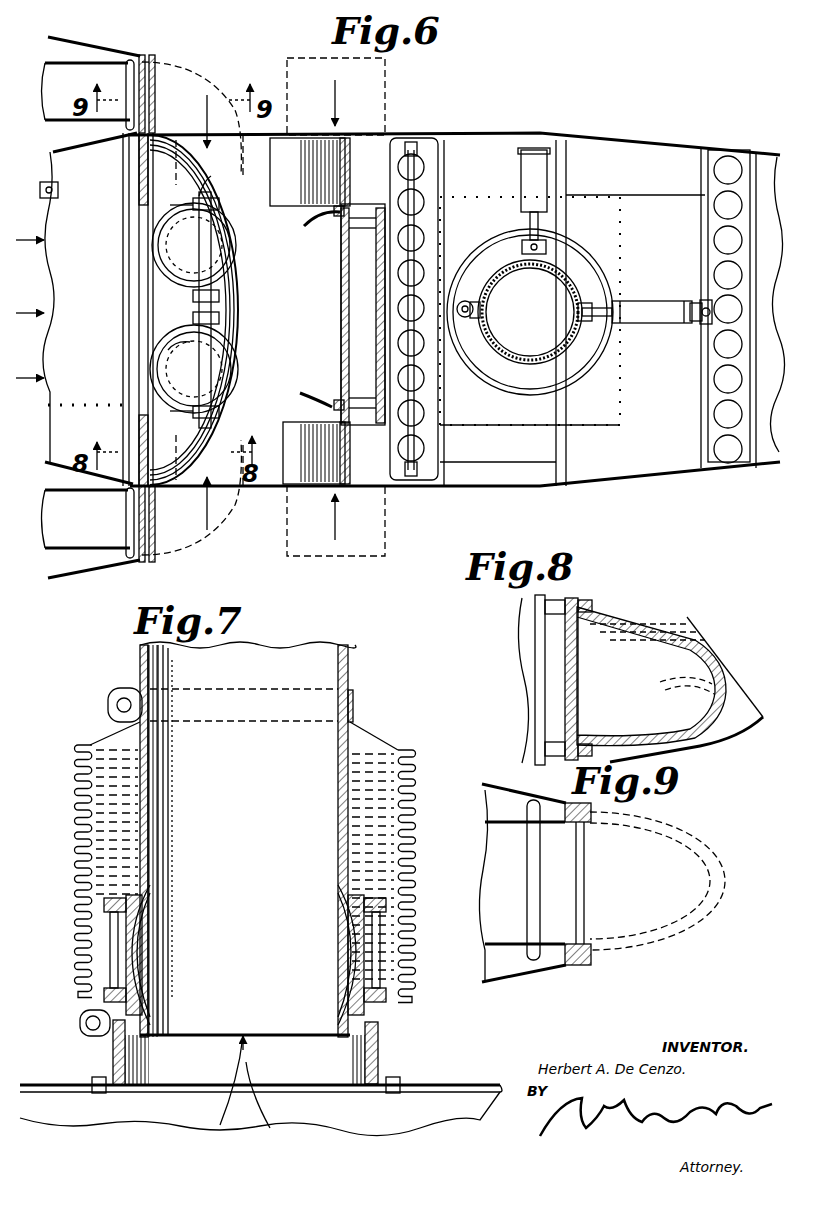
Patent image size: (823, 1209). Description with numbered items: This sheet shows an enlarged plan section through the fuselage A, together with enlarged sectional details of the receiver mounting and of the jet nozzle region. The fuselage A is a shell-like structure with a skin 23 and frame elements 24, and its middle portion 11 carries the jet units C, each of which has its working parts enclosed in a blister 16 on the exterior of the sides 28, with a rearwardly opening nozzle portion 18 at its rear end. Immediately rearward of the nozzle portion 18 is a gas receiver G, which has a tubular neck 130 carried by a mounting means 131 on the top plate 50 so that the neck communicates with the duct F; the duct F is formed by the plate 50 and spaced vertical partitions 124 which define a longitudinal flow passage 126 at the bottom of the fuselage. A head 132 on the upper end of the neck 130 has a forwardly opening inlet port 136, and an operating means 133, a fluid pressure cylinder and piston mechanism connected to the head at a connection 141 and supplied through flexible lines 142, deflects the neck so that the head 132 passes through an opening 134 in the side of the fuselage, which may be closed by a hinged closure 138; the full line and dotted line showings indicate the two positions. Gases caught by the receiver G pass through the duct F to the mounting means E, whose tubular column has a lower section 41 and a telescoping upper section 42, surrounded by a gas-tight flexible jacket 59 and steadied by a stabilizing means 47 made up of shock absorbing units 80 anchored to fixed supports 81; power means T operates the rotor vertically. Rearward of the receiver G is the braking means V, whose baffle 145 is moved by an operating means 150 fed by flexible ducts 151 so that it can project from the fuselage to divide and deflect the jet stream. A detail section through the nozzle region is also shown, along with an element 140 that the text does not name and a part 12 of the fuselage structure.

In FIG. 6, the middle portion 11 is at (510, 482).
In FIG. 6, the rear frame 12 is at (752, 464).
In FIG. 6, the blister 16 is at (74, 38).
In FIG. 8, the blister 16 is at (502, 770).
In FIG. 9, the blister 16 is at (522, 883).
In FIG. 6, the nozzle portion 18 is at (146, 70).
In FIG. 9, the nozzle portion 18 is at (560, 832).
In FIG. 6, the skin 23 is at (676, 142).
In FIG. 6, the frame elements 24 is at (568, 174).
In FIG. 6, the sides 28 is at (462, 136).
In FIG. 6, the lower section 41 is at (496, 284).
In FIG. 6, the upper section 42 is at (498, 288).
In FIG. 6, the stabilizing means 47 is at (652, 326).
In FIG. 7, the top plate 50 is at (452, 1084).
In FIG. 6, the flexible jacket 59 is at (602, 372).
In FIG. 6, the shock absorbing units 80 is at (520, 176).
In FIG. 6, the fixed supports 81 is at (698, 300).
In FIG. 6, the vertical partitions 124 is at (46, 408).
In FIG. 7, the flow passage 126 is at (260, 1114).
In FIG. 7, the tubular neck 130 is at (350, 672).
In FIG. 6, the mounting means 131 is at (150, 264).
In FIG. 7, the mounting means 131 is at (384, 938).
In FIG. 6, the head 132 is at (182, 70).
In FIG. 8, the head 132 is at (648, 608).
In FIG. 9, the head 132 is at (657, 881).
In FIG. 6, the operating means 133 is at (232, 350).
In FIG. 6, the opening 134 is at (226, 135).
In FIG. 7, the inlet port 136 is at (146, 1090).
In FIG. 8, the inlet port 136 is at (592, 626).
In FIG. 6, the hinged closure 138 is at (208, 94).
In FIG. 6, the rod 140 is at (220, 304).
In FIG. 6, the connection 141 is at (199, 194).
In FIG. 6, the flexible lines or ducts 142 is at (150, 336).
In FIG. 6, the baffle 145 is at (320, 138).
In FIG. 6, the operating means 150 is at (352, 266).
In FIG. 6, the flexible ducts 151 is at (318, 220).
In FIG. 6, the fuselage A is at (598, 120).
In FIG. 6, the jet unit C is at (104, 62).
In FIG. 9, the jet unit C is at (478, 820).
In FIG. 6, the mounting means E is at (580, 294).
In FIG. 6, the duct F is at (46, 182).
In FIG. 7, the duct F is at (418, 1082).
In FIG. 6, the gas receiver G is at (186, 132).
In FIG. 7, the gas receiver G is at (352, 650).
In FIG. 8, the gas receiver G is at (684, 618).
In FIG. 6, the power means T is at (466, 294).
In FIG. 6, the braking means V is at (356, 128).